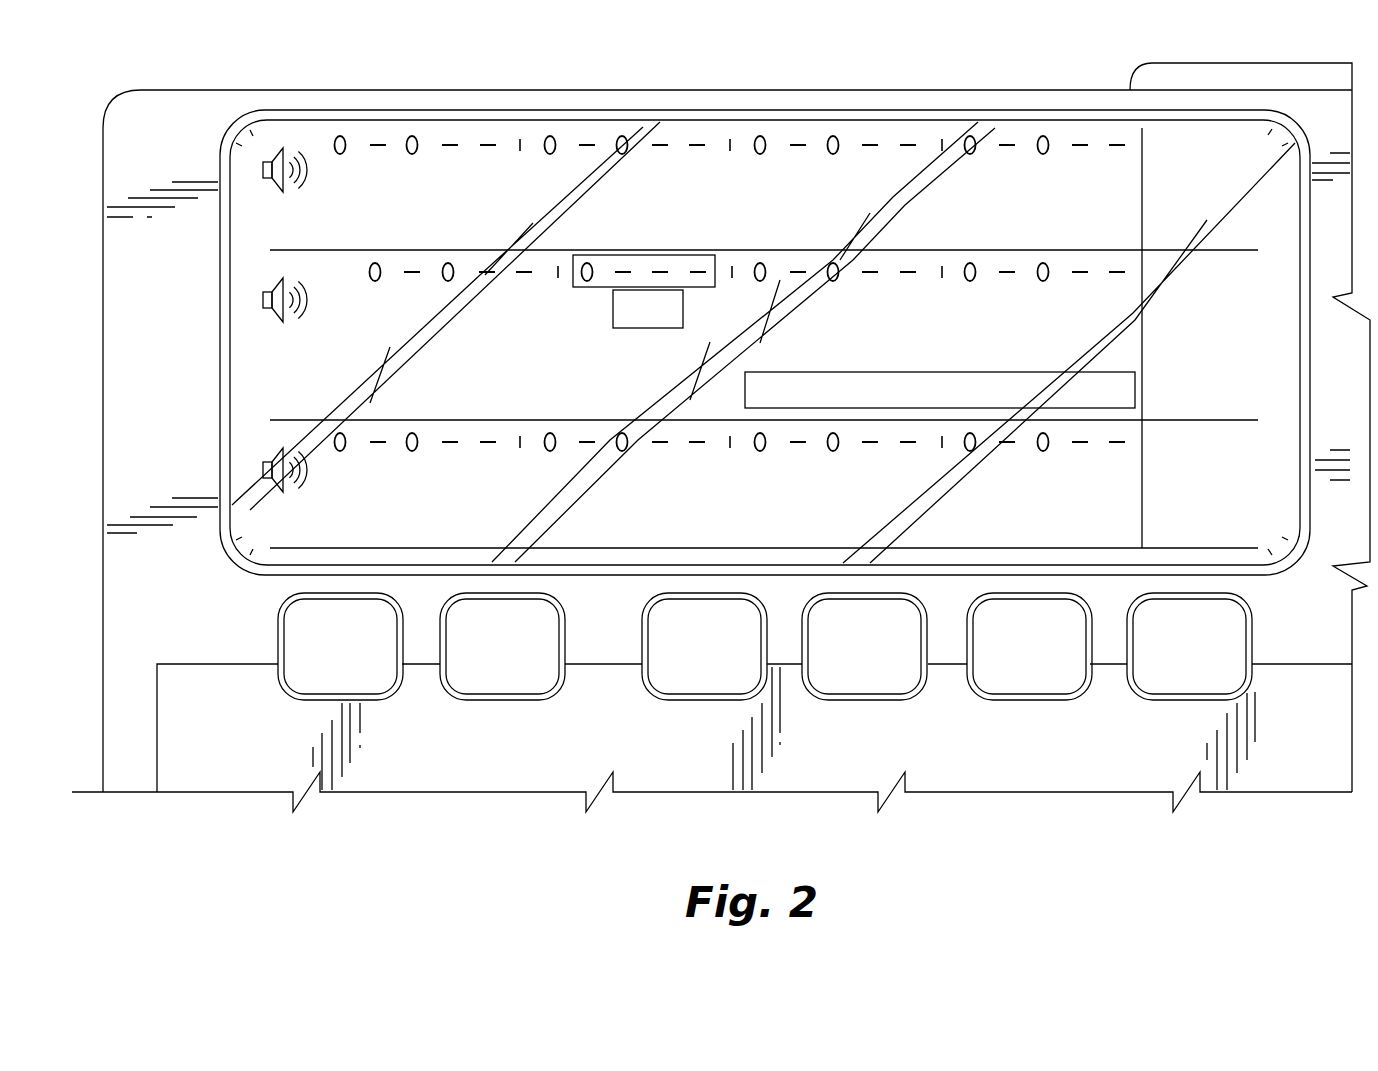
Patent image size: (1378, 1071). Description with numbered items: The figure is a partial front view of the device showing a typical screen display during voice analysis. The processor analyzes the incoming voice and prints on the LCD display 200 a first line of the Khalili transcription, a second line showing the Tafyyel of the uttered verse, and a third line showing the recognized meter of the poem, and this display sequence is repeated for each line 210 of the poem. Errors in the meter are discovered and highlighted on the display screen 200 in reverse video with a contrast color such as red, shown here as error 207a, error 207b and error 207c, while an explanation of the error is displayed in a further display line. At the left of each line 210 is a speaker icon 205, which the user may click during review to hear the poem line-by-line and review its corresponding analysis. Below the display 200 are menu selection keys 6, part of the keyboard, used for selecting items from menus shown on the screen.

The LCD display 200 is at (320, 128).
The speaker icon 205 is at (262, 171).
The error 207a is at (710, 250).
The error 207b is at (613, 313).
The error 207c is at (817, 408).
The line 210 is at (1213, 143).
The menu selection keys 6 is at (353, 700).